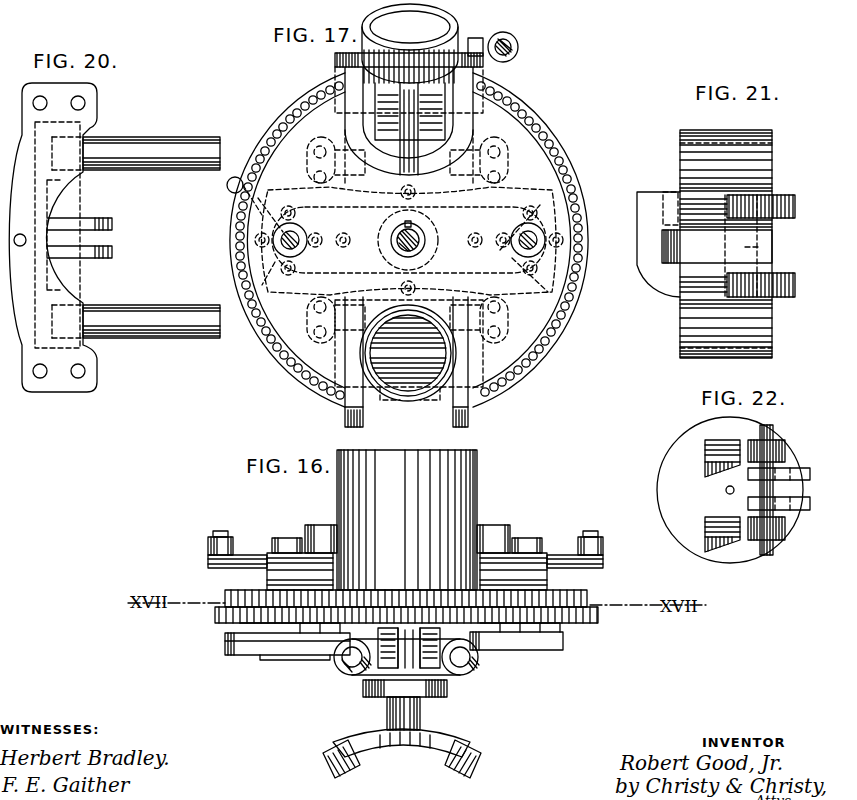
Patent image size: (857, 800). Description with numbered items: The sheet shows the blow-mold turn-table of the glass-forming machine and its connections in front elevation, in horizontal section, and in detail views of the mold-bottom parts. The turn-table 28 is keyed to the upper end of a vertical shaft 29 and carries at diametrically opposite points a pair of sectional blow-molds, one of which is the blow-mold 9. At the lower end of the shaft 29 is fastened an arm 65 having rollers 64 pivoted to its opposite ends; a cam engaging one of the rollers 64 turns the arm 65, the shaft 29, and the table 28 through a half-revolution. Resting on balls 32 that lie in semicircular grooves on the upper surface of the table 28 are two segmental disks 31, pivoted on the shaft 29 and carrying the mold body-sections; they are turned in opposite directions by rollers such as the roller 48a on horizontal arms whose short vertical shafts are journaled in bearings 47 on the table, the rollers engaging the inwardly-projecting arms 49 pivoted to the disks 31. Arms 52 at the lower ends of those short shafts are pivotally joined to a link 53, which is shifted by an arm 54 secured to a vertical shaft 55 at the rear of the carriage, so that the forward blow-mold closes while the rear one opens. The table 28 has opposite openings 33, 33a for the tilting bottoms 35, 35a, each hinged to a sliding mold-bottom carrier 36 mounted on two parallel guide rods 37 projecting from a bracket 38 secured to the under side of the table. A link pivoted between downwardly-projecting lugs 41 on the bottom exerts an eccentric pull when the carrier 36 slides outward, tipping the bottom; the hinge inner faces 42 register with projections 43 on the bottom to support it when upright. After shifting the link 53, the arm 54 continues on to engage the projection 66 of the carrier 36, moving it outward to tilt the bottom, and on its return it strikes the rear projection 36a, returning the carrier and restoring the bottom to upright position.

In FIG. 16, the sectional blow-mold 9 is at (337, 492).
In FIG. 17, the turn-table 28 is at (556, 138).
In FIG. 16, the turn-table 28 is at (576, 625).
In FIG. 17, the vertical shaft 29 is at (422, 236).
In FIG. 16, the vertical shaft 29 is at (421, 712).
In FIG. 16, the segmental disk 31 is at (225, 598).
In FIG. 17, the balls 32 is at (272, 116).
In FIG. 17, the opening 33 is at (406, 366).
In FIG. 17, the opening 33a is at (424, 129).
In FIG. 17, the tilting bottom 35 is at (409, 350).
In FIG. 22, the tilting bottom 35 is at (730, 490).
In FIG. 17, the tilting bottom 35a is at (410, 89).
In FIG. 17, the mold-bottom carrier 36 is at (476, 68).
In FIG. 21, the mold-bottom carrier 36 is at (697, 173).
In FIG. 16, the mold-bottom carrier 36 is at (366, 683).
In FIG. 21, the rear projection 36a is at (672, 212).
In FIG. 20, the guide rod 37 is at (150, 146).
In FIG. 17, the guide rod 37 is at (345, 415).
In FIG. 16, the guide rod 37 is at (351, 658).
In FIG. 20, the bracket 38 is at (62, 198).
In FIG. 22, the lug 41 is at (785, 470).
In FIG. 21, the hinge inner face 42 is at (698, 207).
In FIG. 22, the projection 43 is at (705, 452).
In FIG. 17, the bearing 47 is at (288, 252).
In FIG. 16, the horizontal roller 48a is at (222, 535).
In FIG. 16, the inwardly-projecting arm 49 is at (278, 541).
In FIG. 16, the arm 52 is at (225, 641).
In FIG. 16, the link 53 is at (258, 656).
In FIG. 17, the arm 54 is at (467, 53).
In FIG. 17, the vertical shaft 55 is at (519, 47).
In FIG. 16, the roller 64 is at (343, 770).
In FIG. 16, the arm 65 is at (401, 752).
In FIG. 21, the projection 66 is at (772, 248).
In FIG. 16, the projection 66 is at (447, 690).